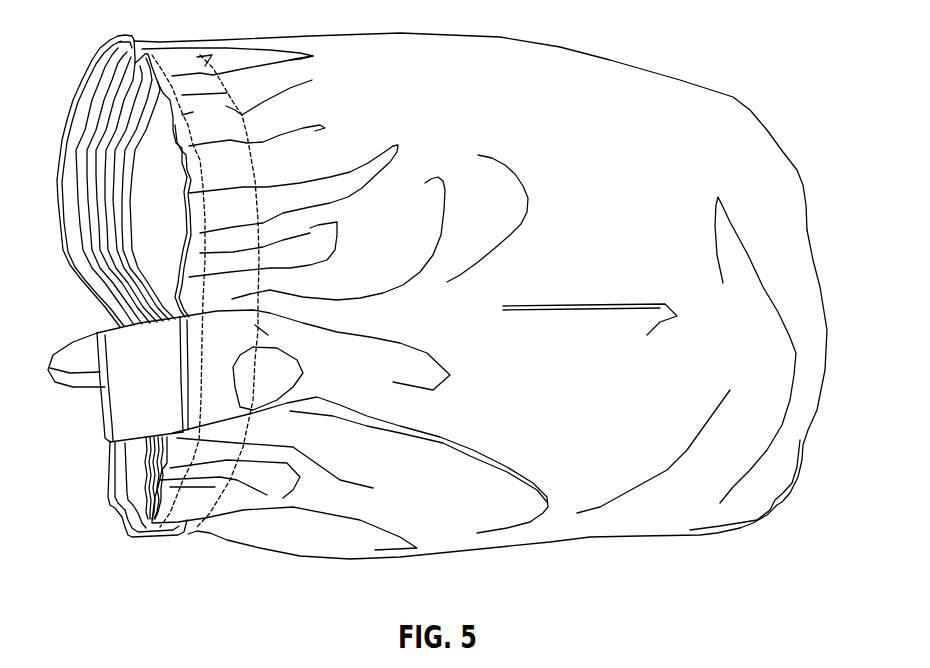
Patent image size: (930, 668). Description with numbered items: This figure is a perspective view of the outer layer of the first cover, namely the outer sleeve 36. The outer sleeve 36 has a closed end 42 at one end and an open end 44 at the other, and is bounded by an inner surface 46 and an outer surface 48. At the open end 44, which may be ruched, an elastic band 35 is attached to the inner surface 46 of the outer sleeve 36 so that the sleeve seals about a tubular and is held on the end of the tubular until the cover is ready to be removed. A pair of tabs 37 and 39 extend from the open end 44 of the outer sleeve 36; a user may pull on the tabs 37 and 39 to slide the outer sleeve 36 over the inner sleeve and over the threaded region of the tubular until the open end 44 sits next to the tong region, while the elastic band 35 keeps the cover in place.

The elastic band 35 is at (104, 286).
The outer sleeve 36 is at (470, 128).
The tab 37 is at (60, 376).
The tab 39 is at (112, 386).
The closed end 42 is at (793, 380).
The open end 44 is at (69, 181).
The inner surface 46 is at (102, 186).
The outer surface 48 is at (464, 569).